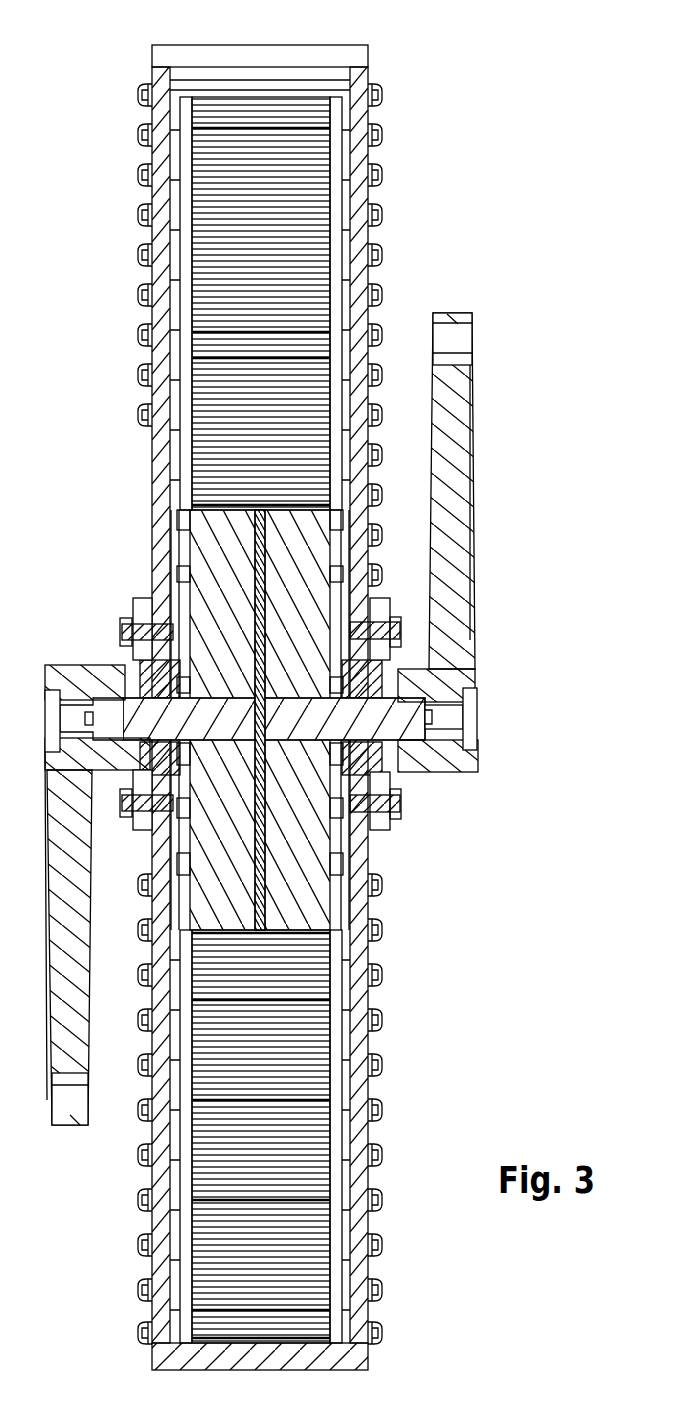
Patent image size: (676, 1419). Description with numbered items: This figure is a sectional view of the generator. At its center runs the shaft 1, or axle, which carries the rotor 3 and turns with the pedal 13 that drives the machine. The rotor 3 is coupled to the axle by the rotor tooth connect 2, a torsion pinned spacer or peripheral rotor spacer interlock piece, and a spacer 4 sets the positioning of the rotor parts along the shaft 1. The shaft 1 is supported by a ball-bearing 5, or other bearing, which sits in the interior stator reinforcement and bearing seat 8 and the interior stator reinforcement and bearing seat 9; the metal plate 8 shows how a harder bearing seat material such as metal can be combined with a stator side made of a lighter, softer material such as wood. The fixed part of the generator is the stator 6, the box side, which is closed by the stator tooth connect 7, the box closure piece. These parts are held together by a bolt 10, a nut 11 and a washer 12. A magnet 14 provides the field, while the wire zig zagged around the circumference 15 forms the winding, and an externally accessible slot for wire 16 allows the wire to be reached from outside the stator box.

The shaft 1 is at (402, 720).
The rotor tooth connect 2 is at (235, 538).
The rotor 3 is at (334, 190).
The spacer 4 is at (185, 690).
The ball-bearing 5 is at (370, 762).
The stator 6 is at (352, 270).
The stator tooth connect 7 is at (328, 53).
The interior stator reinforcement and bearing seat 8 is at (148, 600).
The interior stator reinforcement and bearing seat 9 is at (122, 612).
The bolt 10 is at (382, 838).
The nut 11 is at (402, 812).
The washer 12 is at (392, 614).
The pedal 13 is at (462, 492).
The magnet 14 is at (258, 283).
The wire zig zagged around the circumference 15 is at (140, 355).
The externally accessible slot for wire 16 is at (270, 592).